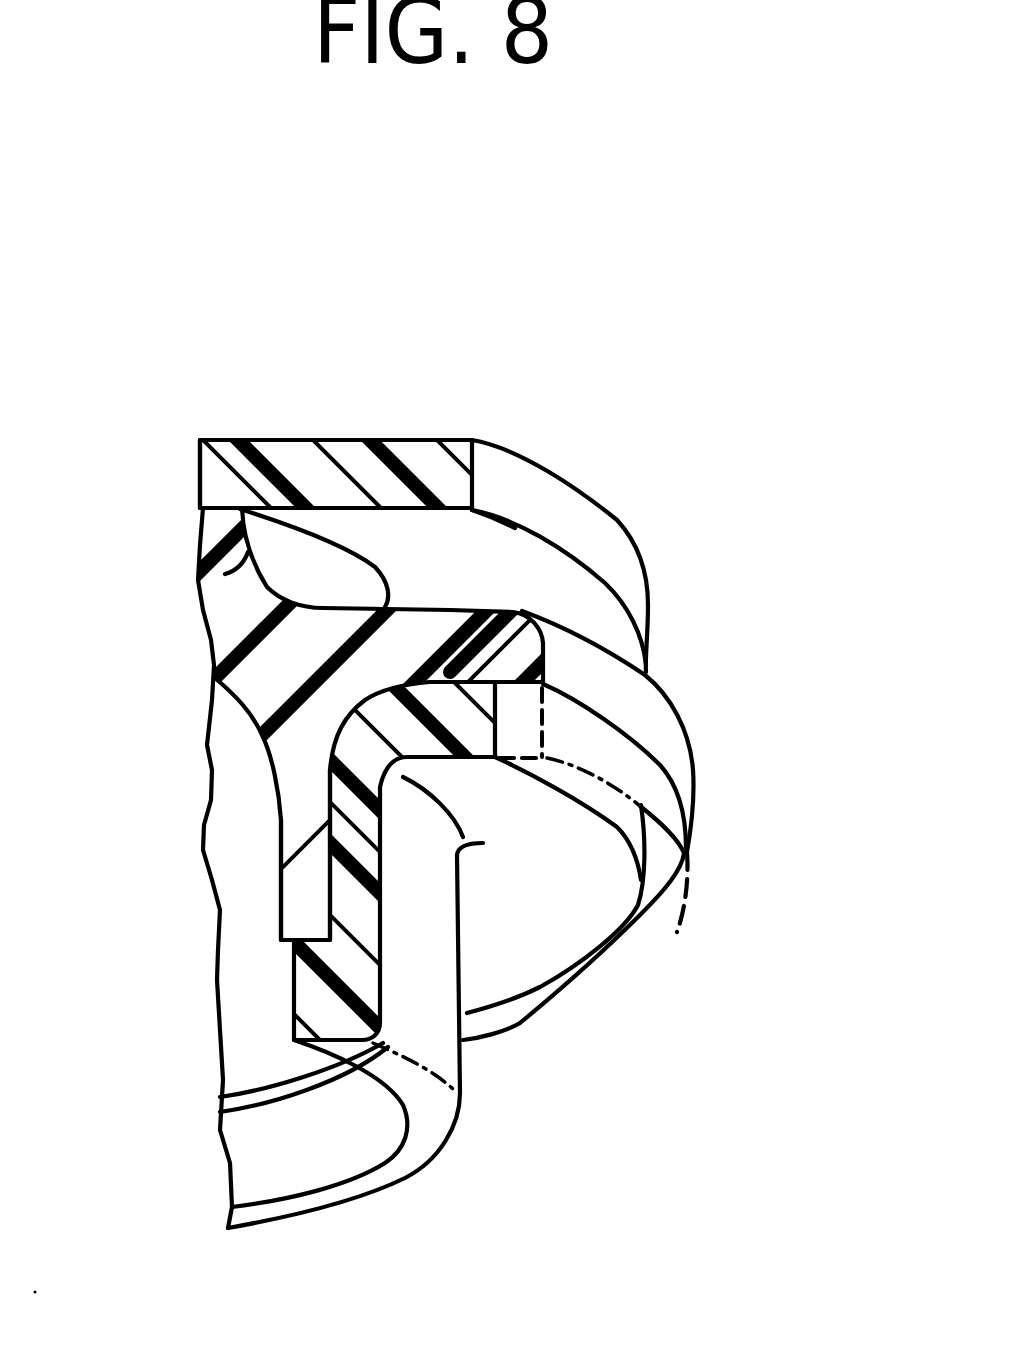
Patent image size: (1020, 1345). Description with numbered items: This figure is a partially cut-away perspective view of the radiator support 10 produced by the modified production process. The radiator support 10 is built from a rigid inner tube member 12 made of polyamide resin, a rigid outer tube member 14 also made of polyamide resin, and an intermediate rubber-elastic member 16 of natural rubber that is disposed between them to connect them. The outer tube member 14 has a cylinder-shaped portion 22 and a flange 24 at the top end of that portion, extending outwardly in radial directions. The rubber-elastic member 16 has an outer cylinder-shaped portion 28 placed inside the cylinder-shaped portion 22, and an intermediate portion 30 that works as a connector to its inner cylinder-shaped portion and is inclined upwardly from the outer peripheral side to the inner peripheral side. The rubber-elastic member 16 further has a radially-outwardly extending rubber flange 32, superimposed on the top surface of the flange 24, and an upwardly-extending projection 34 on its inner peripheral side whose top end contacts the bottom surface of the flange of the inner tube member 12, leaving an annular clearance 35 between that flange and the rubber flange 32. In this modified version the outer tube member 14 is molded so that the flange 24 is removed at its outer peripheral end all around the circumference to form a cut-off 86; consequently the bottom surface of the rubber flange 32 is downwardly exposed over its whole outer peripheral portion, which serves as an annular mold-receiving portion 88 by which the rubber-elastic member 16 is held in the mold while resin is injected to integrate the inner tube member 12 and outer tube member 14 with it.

The radiator support 10 is at (735, 306).
The rigid inner tube member 12 is at (318, 397).
The rigid outer tube member 14 is at (510, 1071).
The rubber-elastic member 16 is at (740, 775).
The cylinder-shaped portion 22 is at (320, 998).
The flange 24 is at (577, 893).
The outer cylinder-shaped portion 28 is at (303, 887).
The intermediate portion 30 is at (297, 637).
The rubber flange 32 is at (445, 613).
The upwardly-extending projection 34 is at (240, 442).
The annular clearance 35 is at (437, 533).
The cut-off 86 is at (593, 755).
The annular mold-receiving portion 88 is at (593, 671).